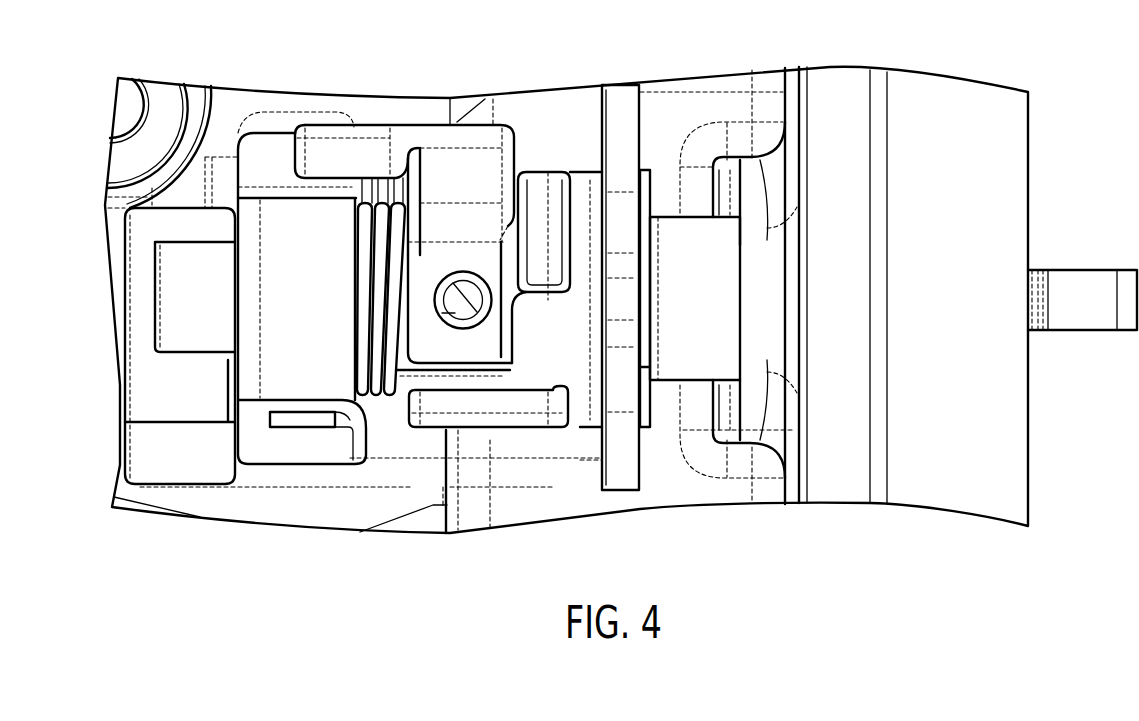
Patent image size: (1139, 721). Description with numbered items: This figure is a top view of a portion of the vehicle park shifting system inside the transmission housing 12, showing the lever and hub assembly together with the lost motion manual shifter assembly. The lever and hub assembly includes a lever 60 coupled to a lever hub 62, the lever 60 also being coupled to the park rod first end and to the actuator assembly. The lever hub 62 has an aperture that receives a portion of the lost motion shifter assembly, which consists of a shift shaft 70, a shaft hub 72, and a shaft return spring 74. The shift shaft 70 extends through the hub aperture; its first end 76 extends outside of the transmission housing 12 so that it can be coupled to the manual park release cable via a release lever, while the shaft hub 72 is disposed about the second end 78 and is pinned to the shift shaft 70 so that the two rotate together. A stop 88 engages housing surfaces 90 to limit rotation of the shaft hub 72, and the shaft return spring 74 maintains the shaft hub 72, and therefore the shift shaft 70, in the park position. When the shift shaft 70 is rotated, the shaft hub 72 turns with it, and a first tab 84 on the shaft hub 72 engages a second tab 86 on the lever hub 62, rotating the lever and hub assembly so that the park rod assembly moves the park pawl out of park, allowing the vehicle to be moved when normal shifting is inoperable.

The housing 12 is at (823, 80).
The lever 60 is at (624, 104).
The lever hub 62 is at (591, 192).
The shift shaft 70 is at (213, 330).
The shaft hub 72 is at (467, 405).
The shaft return spring 74 is at (388, 393).
The first end 76 is at (1078, 294).
The second end 78 is at (173, 347).
The first tab 84 is at (531, 193).
The second tab 86 is at (540, 365).
The stop 88 is at (346, 145).
The housing surfaces 90 is at (263, 150).